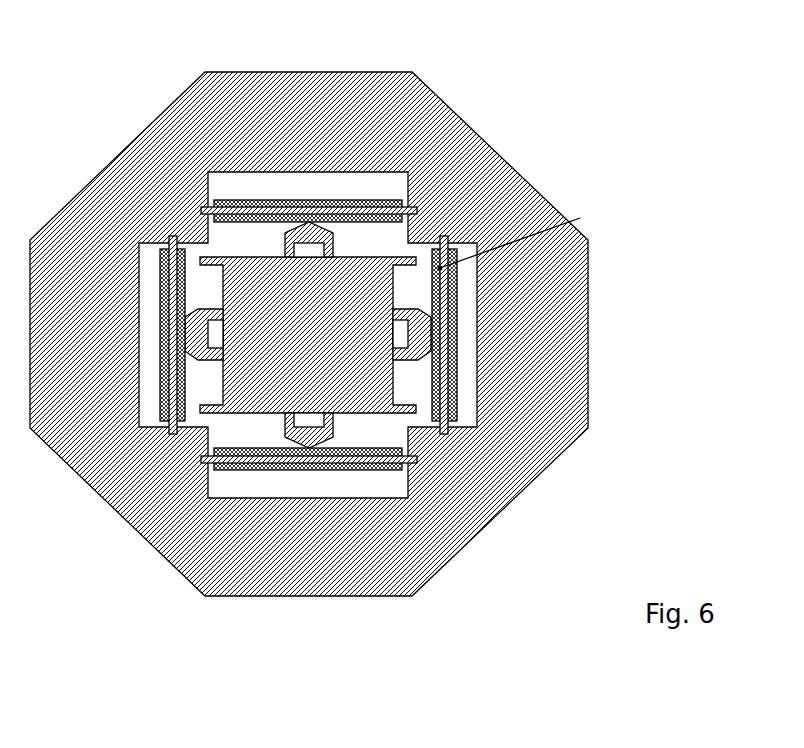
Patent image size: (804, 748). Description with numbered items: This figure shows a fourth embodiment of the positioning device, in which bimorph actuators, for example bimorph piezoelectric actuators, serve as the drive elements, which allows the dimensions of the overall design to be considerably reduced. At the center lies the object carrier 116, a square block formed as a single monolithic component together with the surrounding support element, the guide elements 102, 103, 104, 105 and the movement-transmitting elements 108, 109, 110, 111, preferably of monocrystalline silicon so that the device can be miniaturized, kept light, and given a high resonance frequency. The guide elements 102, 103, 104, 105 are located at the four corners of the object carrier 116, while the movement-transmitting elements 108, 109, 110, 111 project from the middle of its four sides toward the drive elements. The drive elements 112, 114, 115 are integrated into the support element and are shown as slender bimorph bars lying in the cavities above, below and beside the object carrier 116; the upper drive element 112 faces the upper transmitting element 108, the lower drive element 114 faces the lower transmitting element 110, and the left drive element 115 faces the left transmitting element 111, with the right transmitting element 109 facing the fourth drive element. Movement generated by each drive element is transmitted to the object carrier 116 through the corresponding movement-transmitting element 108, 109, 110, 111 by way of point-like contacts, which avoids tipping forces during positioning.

The object carrier 116 is at (295, 308).
The guide element 102 is at (410, 251).
The guide element 103 is at (412, 415).
The guide element 104 is at (203, 410).
The guide element 105 is at (203, 257).
The movement-transmitting element 108 is at (319, 238).
The movement-transmitting element 109 is at (420, 330).
The movement-transmitting element 110 is at (310, 436).
The movement-transmitting element 111 is at (202, 335).
The drive element 112 is at (248, 204).
The drive element 114 is at (243, 457).
The drive element 115 is at (168, 283).